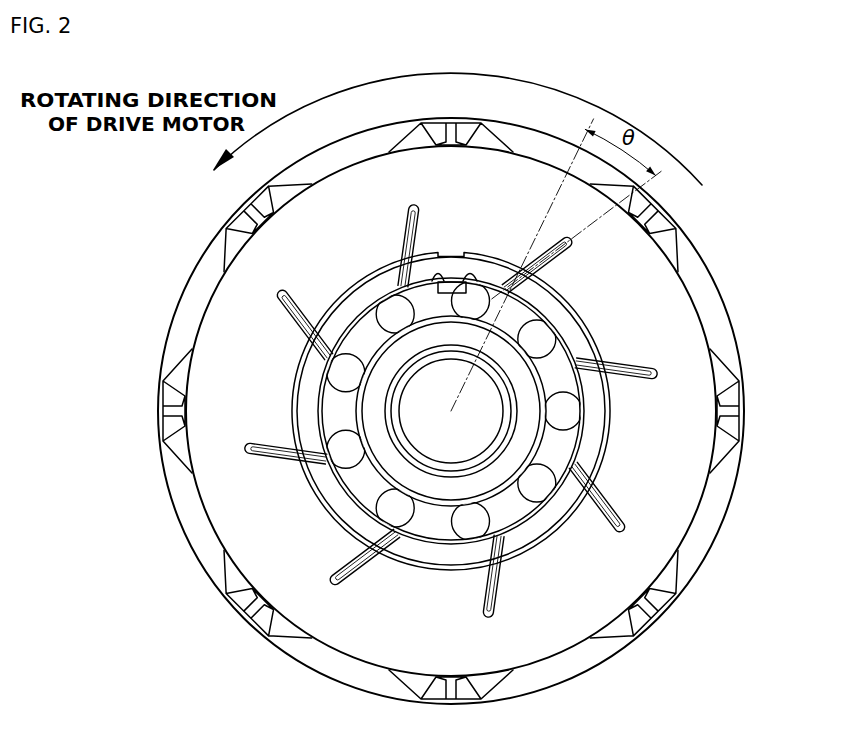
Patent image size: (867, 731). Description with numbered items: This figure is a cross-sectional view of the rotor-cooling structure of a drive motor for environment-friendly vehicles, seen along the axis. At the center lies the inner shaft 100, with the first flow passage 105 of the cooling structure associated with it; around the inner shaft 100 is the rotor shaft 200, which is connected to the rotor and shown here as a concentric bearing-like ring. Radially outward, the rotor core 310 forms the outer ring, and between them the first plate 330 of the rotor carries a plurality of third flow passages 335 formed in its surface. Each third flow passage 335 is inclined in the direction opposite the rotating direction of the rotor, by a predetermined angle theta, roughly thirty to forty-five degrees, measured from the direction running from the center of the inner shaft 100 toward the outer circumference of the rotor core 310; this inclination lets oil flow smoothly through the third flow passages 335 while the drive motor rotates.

The inner shaft 100 is at (403, 447).
The first flow passage 105 is at (421, 414).
The rotor shaft 200 is at (400, 355).
The rotor core 310 is at (715, 303).
The first plate 330 is at (527, 411).
The third flow passage 335 is at (657, 377).